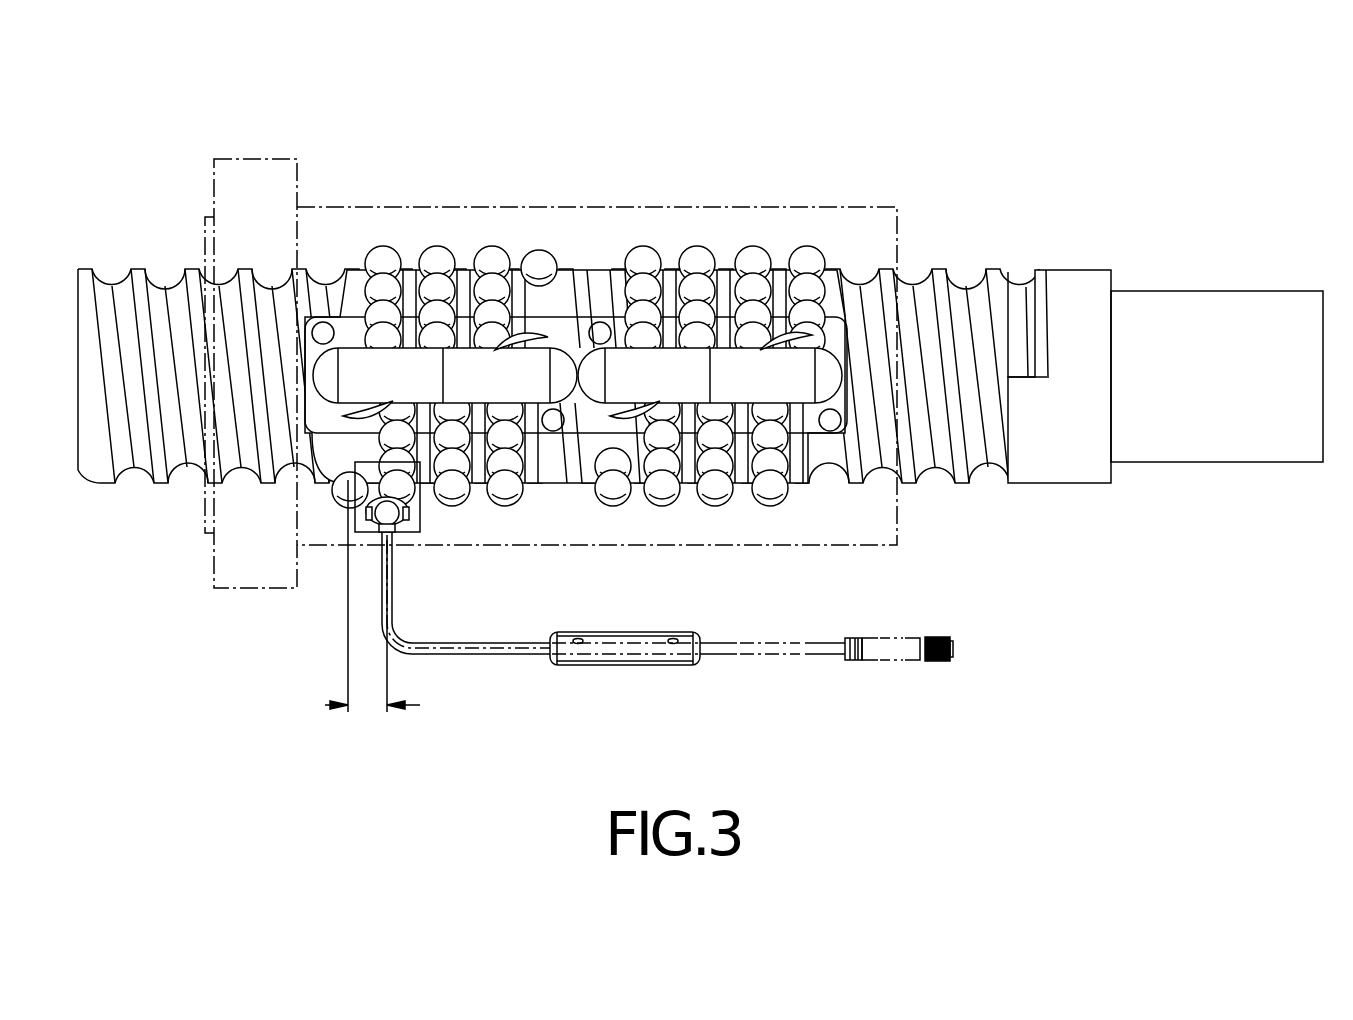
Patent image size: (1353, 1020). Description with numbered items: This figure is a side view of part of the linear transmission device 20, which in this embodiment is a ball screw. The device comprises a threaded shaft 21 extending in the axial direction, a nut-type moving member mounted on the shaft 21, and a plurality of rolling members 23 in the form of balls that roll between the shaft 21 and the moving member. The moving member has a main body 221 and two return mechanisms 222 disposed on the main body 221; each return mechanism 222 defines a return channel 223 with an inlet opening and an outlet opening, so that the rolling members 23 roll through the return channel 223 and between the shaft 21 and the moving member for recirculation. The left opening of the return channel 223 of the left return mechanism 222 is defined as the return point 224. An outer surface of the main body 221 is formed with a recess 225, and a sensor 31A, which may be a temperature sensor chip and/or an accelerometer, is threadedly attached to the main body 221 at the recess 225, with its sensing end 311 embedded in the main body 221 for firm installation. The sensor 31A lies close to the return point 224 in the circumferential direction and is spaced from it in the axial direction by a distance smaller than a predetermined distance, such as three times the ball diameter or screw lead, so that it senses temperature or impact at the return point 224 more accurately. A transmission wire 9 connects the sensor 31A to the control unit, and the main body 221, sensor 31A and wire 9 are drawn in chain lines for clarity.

The linear transmission device 20 is at (437, 110).
The shaft 21 is at (1072, 270).
The main body 221 is at (674, 195).
The return mechanism 222 is at (522, 380).
The return channel 223 is at (735, 372).
The rolling members 23 is at (490, 272).
The return point 224 is at (348, 490).
The recess 225 is at (410, 506).
The sensor 31A is at (392, 522).
The sensing end 311 is at (405, 516).
The transmission wire 9 is at (775, 660).